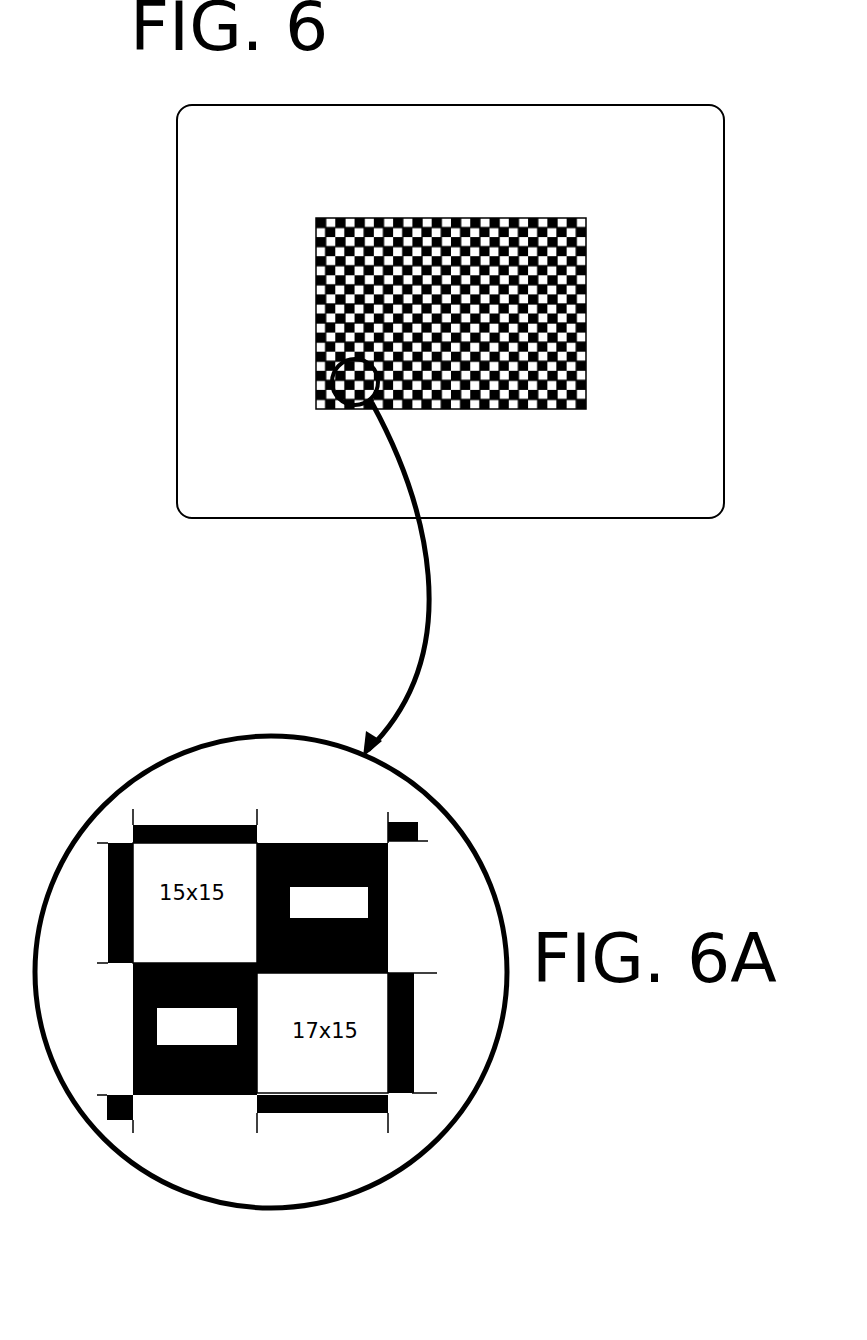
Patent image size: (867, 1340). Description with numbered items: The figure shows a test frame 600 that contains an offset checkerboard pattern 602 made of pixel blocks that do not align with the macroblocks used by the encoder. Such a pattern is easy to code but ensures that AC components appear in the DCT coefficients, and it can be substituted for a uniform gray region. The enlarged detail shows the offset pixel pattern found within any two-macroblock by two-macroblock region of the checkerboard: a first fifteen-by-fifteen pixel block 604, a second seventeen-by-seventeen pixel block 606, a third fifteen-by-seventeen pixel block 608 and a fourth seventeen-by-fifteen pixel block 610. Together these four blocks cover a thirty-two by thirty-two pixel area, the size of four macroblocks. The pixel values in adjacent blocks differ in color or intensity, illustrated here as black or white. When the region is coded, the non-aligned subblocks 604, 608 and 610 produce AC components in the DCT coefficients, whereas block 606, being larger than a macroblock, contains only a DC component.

In FIG. 6, the test frame 600 is at (704, 470).
In FIG. 6, the offset checkerboard pattern 602 is at (586, 384).
In FIG. 6A, the first 15×15 pixel block 604 is at (157, 855).
In FIG. 6A, the second 17×17 pixel block 606 is at (388, 863).
In FIG. 6A, the third 15×17 pixel block 608 is at (168, 1093).
In FIG. 6A, the fourth 17×15 pixel block 610 is at (363, 1070).